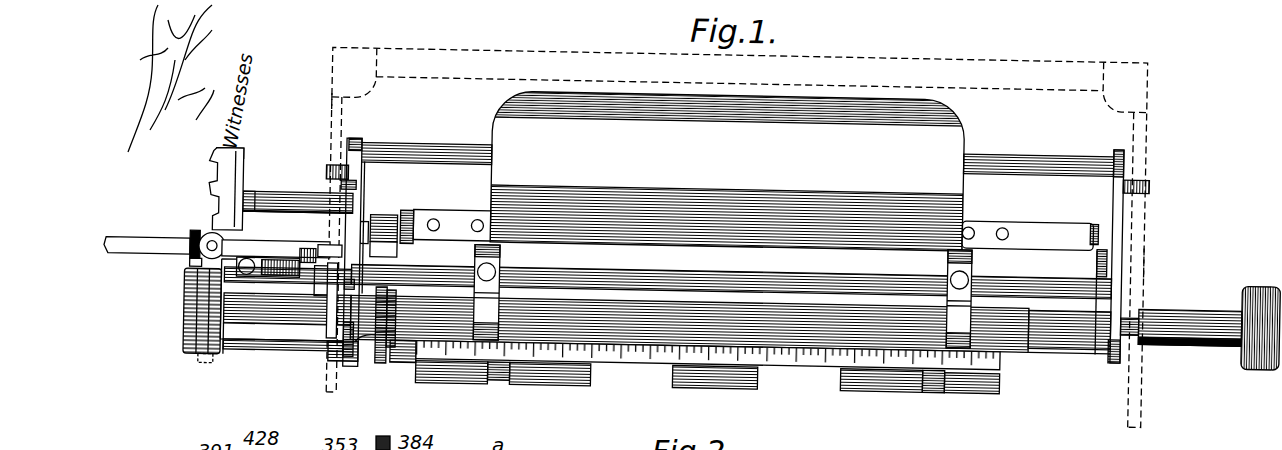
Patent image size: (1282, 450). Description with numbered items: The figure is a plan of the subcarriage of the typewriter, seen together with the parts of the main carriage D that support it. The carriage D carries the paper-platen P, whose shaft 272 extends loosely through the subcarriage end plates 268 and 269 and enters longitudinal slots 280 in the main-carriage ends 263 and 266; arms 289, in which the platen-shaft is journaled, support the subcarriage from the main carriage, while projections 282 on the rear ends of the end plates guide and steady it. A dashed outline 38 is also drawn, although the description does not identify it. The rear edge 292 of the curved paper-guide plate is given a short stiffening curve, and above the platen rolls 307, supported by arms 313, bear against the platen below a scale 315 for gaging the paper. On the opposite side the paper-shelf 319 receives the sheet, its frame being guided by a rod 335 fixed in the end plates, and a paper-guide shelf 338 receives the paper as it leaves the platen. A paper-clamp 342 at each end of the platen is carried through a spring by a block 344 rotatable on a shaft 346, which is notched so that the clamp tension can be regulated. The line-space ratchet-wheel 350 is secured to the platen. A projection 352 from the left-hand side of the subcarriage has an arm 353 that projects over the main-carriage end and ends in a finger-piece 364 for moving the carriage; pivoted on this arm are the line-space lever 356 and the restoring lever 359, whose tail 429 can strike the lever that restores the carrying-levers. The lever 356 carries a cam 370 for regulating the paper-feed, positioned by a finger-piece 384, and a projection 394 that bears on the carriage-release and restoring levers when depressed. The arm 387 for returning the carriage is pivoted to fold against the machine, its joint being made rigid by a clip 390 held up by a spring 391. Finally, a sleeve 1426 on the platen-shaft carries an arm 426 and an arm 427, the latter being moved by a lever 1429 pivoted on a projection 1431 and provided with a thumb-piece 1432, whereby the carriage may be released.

The carriage frame 38 is at (861, 60).
The carriage end 263 is at (329, 109).
The carriage end 266 is at (1147, 256).
The end plate 268 is at (345, 199).
The end plate 269 is at (1122, 200).
The platen shaft 272 is at (1132, 332).
The longitudinal slots 280 is at (1135, 306).
The projections 282 is at (332, 176).
The arms 289 is at (1093, 326).
The rear edge 292 is at (333, 365).
The rolls 307 is at (567, 383).
The arms 313 is at (500, 368).
The scale 315 is at (643, 358).
The paper-shelf 319 is at (727, 171).
The rod 335 is at (452, 157).
The paper-guide shelf 338 is at (668, 269).
The paper-clamp 342 is at (490, 337).
The block 344 is at (948, 263).
The shaft 346 is at (721, 280).
The line-space ratchet-wheel 350 is at (368, 395).
The projection 352 is at (353, 154).
The arm 353 is at (276, 237).
The line-space lever 356 is at (320, 276).
The restoring lever 359 is at (190, 276).
The finger-piece 364 is at (212, 185).
The cam 370 is at (412, 212).
The finger-piece 384 is at (385, 236).
The arm 387 is at (125, 256).
The clip 390 is at (203, 247).
The spring 391 is at (268, 255).
The projection 394 is at (322, 252).
The arm 426 is at (325, 298).
The arm 427 is at (190, 308).
The tail 429 is at (353, 243).
The sleeve 1426 is at (245, 336).
The lever 1429 is at (243, 173).
The projection 1431 is at (247, 200).
The thumb-piece 1432 is at (215, 162).
The carriage D is at (599, 403).
The paper-platen P is at (820, 336).